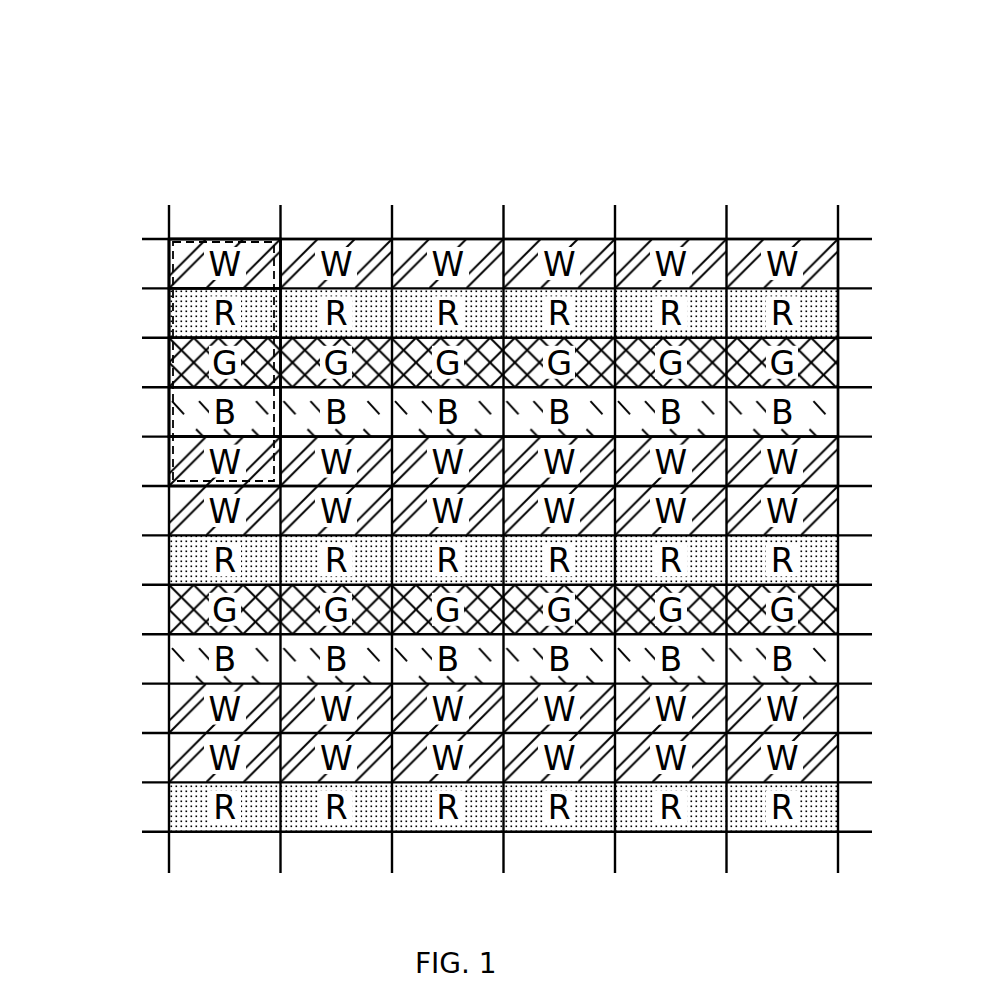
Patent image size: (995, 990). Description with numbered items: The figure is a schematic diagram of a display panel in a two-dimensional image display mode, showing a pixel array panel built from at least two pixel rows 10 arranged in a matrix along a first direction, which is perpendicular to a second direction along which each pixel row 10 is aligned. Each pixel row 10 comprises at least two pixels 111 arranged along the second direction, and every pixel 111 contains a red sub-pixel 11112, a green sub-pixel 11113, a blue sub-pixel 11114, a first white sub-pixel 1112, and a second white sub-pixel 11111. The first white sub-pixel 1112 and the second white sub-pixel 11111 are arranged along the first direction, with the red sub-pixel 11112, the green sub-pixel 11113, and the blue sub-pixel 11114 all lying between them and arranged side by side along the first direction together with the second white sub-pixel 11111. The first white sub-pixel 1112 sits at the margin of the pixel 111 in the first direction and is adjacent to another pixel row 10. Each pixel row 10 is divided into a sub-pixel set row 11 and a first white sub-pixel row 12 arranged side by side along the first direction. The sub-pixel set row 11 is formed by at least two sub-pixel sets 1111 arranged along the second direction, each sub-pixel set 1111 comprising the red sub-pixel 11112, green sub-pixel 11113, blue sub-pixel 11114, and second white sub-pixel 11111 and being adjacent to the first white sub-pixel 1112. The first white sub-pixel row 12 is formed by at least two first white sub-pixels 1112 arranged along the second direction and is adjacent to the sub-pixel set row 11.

The pixel row 10 is at (60, 466).
The sub-pixel set row 11 is at (140, 245).
The first white sub-pixel row 12 is at (140, 442).
The pixel 111 is at (205, 240).
The sub-pixel set 1111 is at (367, 13).
The second white sub-pixel 11111 is at (256, 278).
The red sub-pixel 11112 is at (255, 316).
The green sub-pixel 11113 is at (258, 365).
The blue sub-pixel 11114 is at (256, 413).
The first white sub-pixel 1112 is at (173, 465).